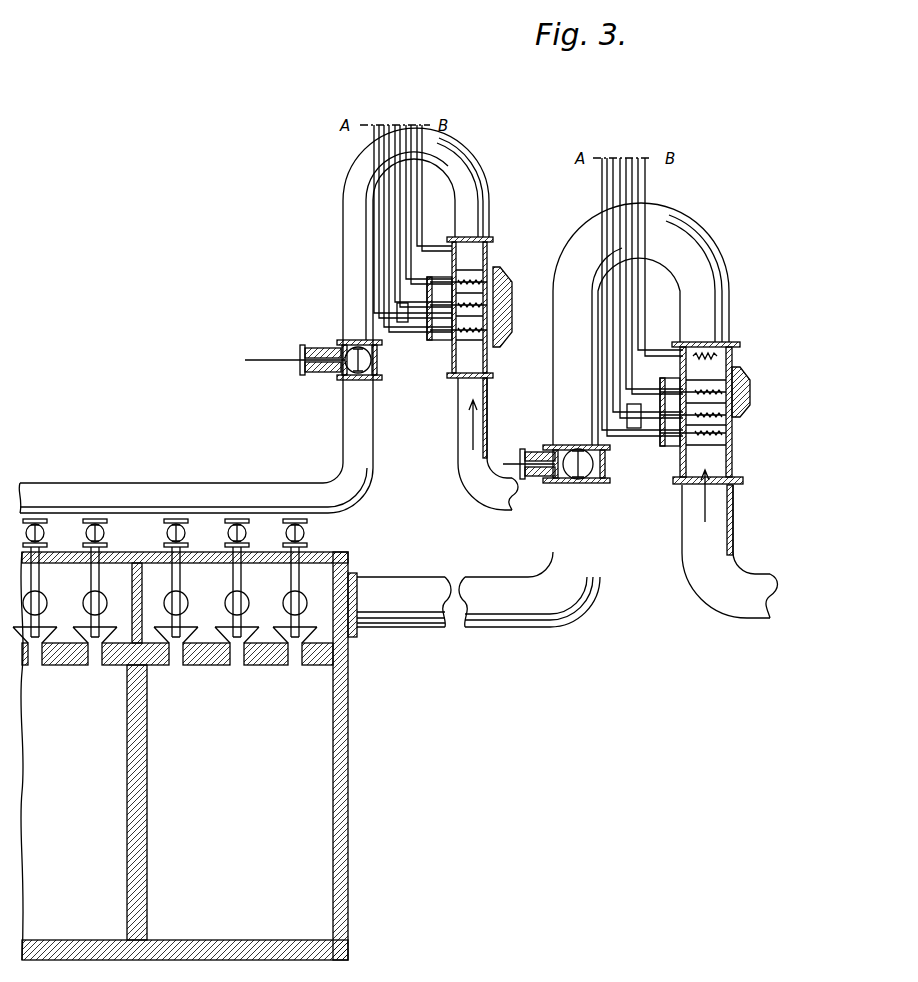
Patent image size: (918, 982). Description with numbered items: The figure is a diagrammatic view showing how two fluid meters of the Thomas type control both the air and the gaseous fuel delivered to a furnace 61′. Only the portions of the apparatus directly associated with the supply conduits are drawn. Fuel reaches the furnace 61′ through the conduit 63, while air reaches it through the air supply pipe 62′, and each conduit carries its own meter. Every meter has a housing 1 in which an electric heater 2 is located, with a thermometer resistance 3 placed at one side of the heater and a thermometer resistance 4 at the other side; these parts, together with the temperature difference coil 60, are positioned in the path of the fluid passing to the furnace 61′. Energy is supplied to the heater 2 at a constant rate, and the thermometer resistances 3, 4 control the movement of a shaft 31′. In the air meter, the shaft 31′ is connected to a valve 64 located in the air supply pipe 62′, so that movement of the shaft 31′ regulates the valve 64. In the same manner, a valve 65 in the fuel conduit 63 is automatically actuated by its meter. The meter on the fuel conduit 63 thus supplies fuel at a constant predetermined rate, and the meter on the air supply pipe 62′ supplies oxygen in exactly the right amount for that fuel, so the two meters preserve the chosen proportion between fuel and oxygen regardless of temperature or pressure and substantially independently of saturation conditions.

The temperature difference coil 60 is at (482, 237).
The housing 1 is at (491, 255).
The thermometer resistance 4 is at (495, 276).
The electric heater 2 is at (487, 305).
The thermometer resistance 3 is at (490, 330).
The valve 65 is at (338, 377).
The valve 64 is at (575, 470).
The shaft 31′ is at (310, 353).
The conduit 63 is at (218, 485).
The air supply pipe 62′ is at (600, 524).
The furnace 61′ is at (348, 756).